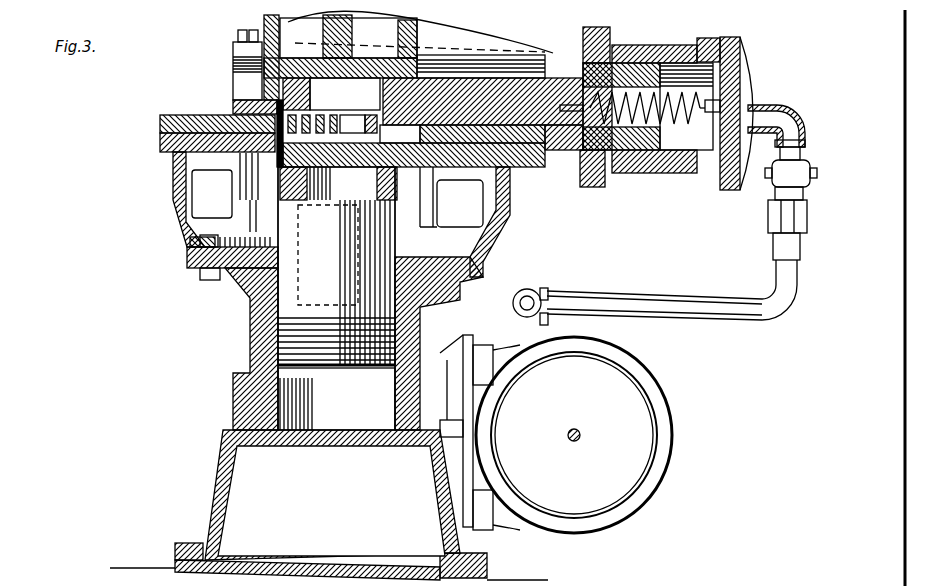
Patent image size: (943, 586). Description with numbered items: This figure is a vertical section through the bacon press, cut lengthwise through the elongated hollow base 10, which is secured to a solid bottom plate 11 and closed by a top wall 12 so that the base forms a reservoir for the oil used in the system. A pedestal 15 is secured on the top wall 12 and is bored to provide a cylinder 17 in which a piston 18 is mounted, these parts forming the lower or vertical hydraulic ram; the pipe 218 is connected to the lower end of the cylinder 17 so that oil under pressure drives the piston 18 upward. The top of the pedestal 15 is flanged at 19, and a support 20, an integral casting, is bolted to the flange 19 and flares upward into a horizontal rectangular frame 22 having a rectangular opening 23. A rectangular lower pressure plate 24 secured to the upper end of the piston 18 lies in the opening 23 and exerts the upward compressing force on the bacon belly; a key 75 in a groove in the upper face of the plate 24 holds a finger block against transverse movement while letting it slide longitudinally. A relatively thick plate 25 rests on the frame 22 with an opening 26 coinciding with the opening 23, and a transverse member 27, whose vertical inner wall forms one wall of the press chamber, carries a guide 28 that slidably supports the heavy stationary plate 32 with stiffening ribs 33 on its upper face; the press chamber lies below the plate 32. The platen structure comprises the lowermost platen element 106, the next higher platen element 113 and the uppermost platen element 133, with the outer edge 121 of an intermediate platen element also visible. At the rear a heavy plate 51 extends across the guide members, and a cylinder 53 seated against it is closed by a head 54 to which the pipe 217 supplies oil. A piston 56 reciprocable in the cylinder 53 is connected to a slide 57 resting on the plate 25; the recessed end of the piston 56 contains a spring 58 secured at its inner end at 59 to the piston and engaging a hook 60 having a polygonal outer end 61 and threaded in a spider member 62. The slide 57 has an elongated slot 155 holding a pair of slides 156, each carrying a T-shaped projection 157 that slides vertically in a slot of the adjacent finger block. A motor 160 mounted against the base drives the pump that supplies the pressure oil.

The hollow base structure 10 is at (213, 498).
The bottom plate 11 is at (175, 562).
The top wall 12 is at (273, 447).
The pedestal 15 is at (250, 288).
The cylinder 17 is at (320, 393).
The piston 18 is at (287, 336).
The flange 19 is at (187, 262).
The support 20 is at (497, 232).
The rectangular frame 22 is at (160, 143).
The rectangular opening 23 is at (279, 167).
The lower pressure plate 24 is at (341, 208).
The relatively thick plate 25 is at (163, 114).
The rectangular opening 26 is at (257, 127).
The member 27 is at (507, 37).
The guide 28 is at (233, 63).
The plate 32 is at (378, 68).
The stiffening ribs 33 is at (264, 19).
The heavy plate 51 is at (583, 187).
The cylinder 53 is at (660, 170).
The head 54 is at (744, 42).
The piston 56 is at (575, 162).
The slide 57 is at (477, 90).
The spring 58 is at (670, 100).
The spring anchorage 59 is at (583, 52).
The hook 60 is at (645, 121).
The polygonal outer end 61 is at (752, 96).
The spider member 62 is at (720, 94).
The key 75 is at (297, 200).
The lowermost platen element 106 is at (373, 160).
The platen element 113 is at (352, 128).
The outer edge 121 is at (297, 75).
The uppermost platen element 133 is at (325, 128).
The elongated slot 155 is at (420, 78).
The slides 156 is at (384, 120).
The T-shaped projection 157 is at (374, 125).
The motor 160 is at (670, 366).
The pipe 217 is at (775, 268).
The pipe 218 is at (772, 178).